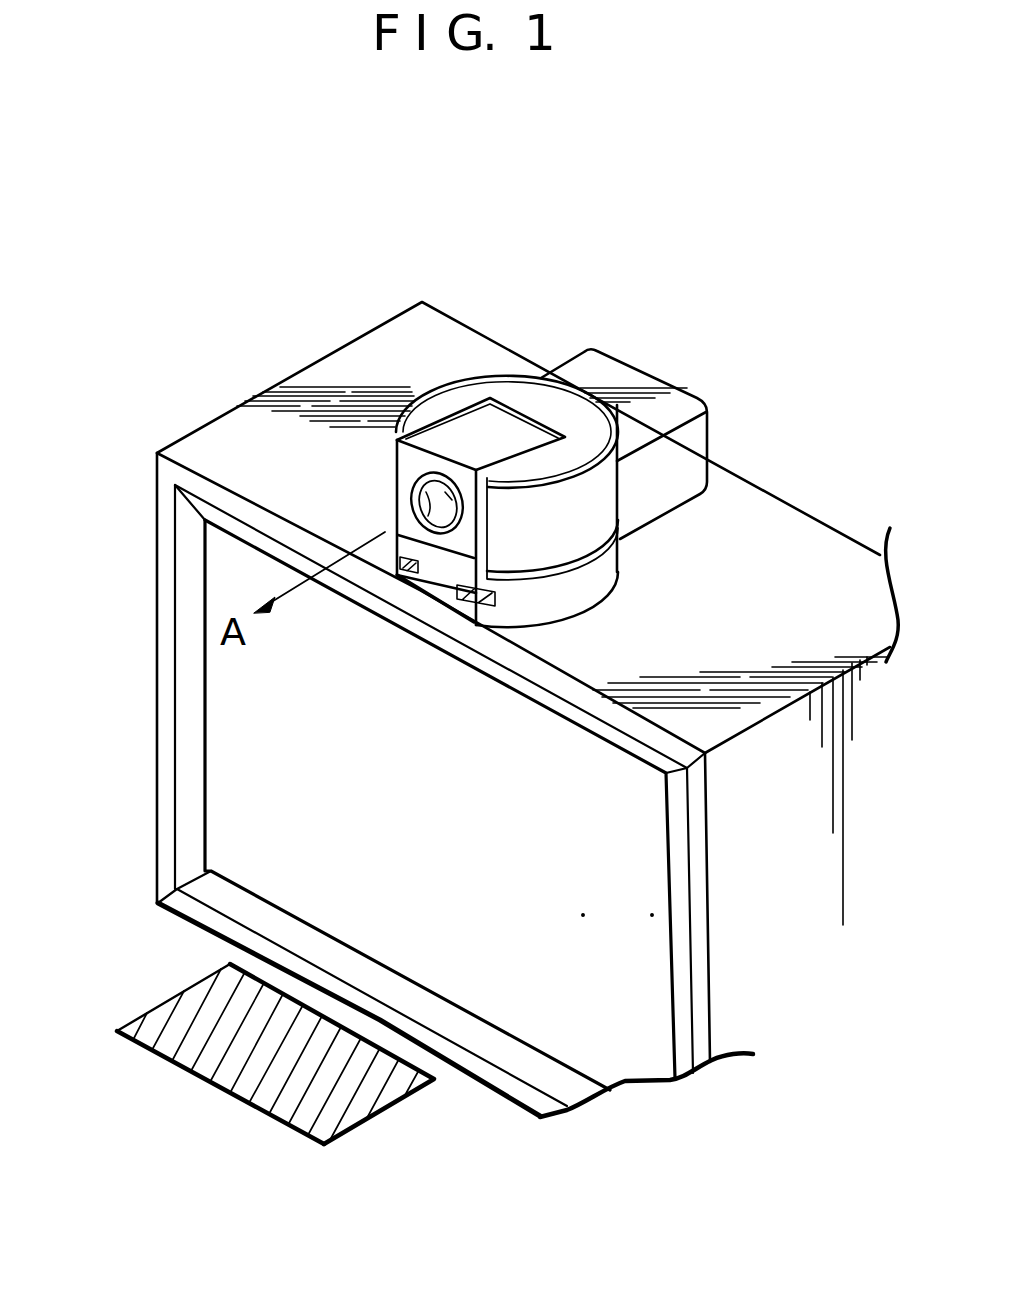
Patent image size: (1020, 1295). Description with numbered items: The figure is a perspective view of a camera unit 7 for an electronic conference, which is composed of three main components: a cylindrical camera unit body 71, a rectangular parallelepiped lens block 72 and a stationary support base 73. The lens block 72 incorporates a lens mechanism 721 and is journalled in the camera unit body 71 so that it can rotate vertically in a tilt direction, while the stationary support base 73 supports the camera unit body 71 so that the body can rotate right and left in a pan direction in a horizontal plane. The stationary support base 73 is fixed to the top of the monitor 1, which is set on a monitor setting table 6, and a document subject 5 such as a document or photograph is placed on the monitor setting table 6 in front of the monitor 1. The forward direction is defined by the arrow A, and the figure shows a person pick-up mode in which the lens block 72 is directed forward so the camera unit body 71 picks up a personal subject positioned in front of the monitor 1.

The monitor 1 is at (337, 362).
The document subject 5 is at (228, 1075).
The monitor setting table 6 is at (157, 822).
The camera unit 7 is at (530, 232).
The camera unit body 71 is at (577, 397).
The lens block 72 is at (417, 450).
The lens mechanism 721 is at (410, 500).
The stationary support base 73 is at (690, 439).